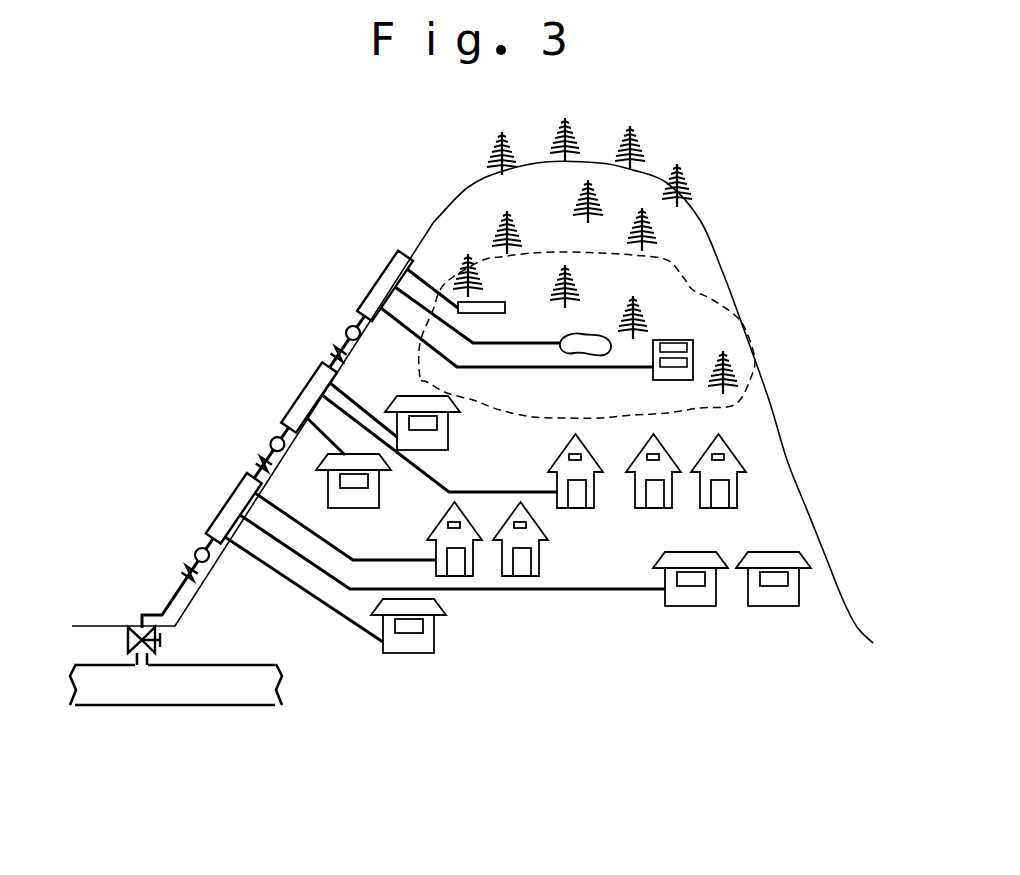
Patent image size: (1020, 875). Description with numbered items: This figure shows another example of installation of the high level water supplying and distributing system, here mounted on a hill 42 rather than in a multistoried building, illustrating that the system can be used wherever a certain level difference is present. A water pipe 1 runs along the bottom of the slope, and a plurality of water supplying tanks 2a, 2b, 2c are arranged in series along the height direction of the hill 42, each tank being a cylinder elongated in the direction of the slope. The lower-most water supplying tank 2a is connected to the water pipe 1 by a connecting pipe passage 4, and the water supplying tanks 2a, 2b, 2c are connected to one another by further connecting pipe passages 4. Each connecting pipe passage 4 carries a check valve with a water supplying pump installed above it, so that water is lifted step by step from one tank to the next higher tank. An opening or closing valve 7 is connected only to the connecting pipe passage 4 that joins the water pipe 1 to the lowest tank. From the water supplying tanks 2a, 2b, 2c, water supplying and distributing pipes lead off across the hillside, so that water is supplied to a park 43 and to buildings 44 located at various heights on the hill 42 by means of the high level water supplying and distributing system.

The water pipe 1 is at (190, 706).
The water supplying tank 2a is at (227, 503).
The water supplying tank 2b is at (305, 387).
The water supplying tank 2c is at (380, 278).
The connecting pipe passage 4 is at (152, 660).
The opening or closing valve 7 is at (132, 641).
The hill 42 is at (760, 318).
The park 43 is at (695, 310).
The buildings 44 is at (772, 557).